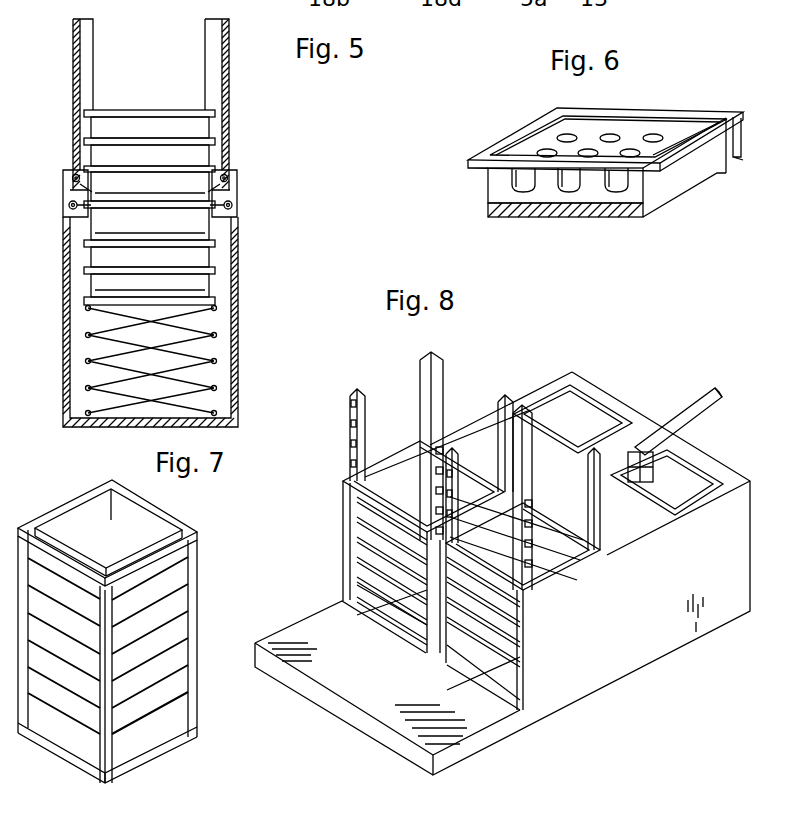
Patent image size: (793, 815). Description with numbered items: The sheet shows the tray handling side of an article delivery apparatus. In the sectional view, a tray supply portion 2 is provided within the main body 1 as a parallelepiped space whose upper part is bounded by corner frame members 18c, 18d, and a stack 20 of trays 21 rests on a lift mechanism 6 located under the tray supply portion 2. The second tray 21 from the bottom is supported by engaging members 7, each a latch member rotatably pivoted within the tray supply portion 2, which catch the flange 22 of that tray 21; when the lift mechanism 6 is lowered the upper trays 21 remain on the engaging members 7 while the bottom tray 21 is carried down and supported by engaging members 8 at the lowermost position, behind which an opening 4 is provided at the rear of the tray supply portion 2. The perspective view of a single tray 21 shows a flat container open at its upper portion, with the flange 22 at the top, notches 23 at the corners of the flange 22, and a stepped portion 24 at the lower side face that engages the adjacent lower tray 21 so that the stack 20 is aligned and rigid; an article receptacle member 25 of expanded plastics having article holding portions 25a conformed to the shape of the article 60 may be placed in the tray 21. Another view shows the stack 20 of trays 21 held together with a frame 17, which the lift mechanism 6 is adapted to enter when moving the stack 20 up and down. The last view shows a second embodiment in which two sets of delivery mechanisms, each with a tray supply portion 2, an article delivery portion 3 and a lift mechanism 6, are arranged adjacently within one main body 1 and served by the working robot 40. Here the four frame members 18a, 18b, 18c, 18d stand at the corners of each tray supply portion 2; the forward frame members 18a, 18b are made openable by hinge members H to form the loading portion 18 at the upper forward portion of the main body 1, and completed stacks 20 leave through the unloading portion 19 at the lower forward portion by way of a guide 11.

In FIG. 5, the main body 1 is at (250, 282).
In FIG. 8, the main body 1 is at (752, 507).
In FIG. 5, the tray supply portion 2 is at (117, 154).
In FIG. 8, the tray supply portion 2 is at (453, 409).
In FIG. 8, the article delivery portion 3 is at (585, 414).
In FIG. 5, the opening 4 is at (222, 225).
In FIG. 5, the lift mechanism 6 is at (217, 298).
In FIG. 8, the lift mechanism 6 is at (373, 608).
In FIG. 5, the engaging members 7 is at (78, 175).
In FIG. 5, the engaging members 8 is at (70, 206).
In FIG. 8, the guide 11 is at (372, 708).
In FIG. 7, the frame 17 is at (70, 479).
In FIG. 8, the loading portion 18 is at (487, 505).
In FIG. 8, the frame member 18a is at (350, 410).
In FIG. 8, the frame member 18b is at (425, 460).
In FIG. 5, the frame member 18c is at (76, 54).
In FIG. 8, the frame member 18c is at (435, 352).
In FIG. 5, the frame member 18d is at (229, 43).
In FIG. 8, the frame member 18d is at (507, 398).
In FIG. 8, the unloading portion 19 is at (357, 563).
In FIG. 5, the stack of trays 20 is at (186, 100).
In FIG. 7, the stack of trays 20 is at (185, 609).
In FIG. 8, the stack of trays 20 is at (357, 535).
In FIG. 5, the tray 21 is at (98, 255).
In FIG. 6, the tray 21 is at (677, 106).
In FIG. 7, the tray 21 is at (175, 658).
In FIG. 8, the tray 21 is at (623, 515).
In FIG. 6, the flange 22 is at (630, 115).
In FIG. 6, the notches 23 is at (742, 152).
In FIG. 6, the stepped portion 24 is at (652, 212).
In FIG. 6, the article receptacle member 25 is at (590, 190).
In FIG. 6, the article holding portions 25a is at (617, 180).
In FIG. 8, the working robot 40 is at (703, 398).
In FIG. 8, the article 60 is at (650, 486).
In FIG. 8, the hinge members H is at (350, 445).